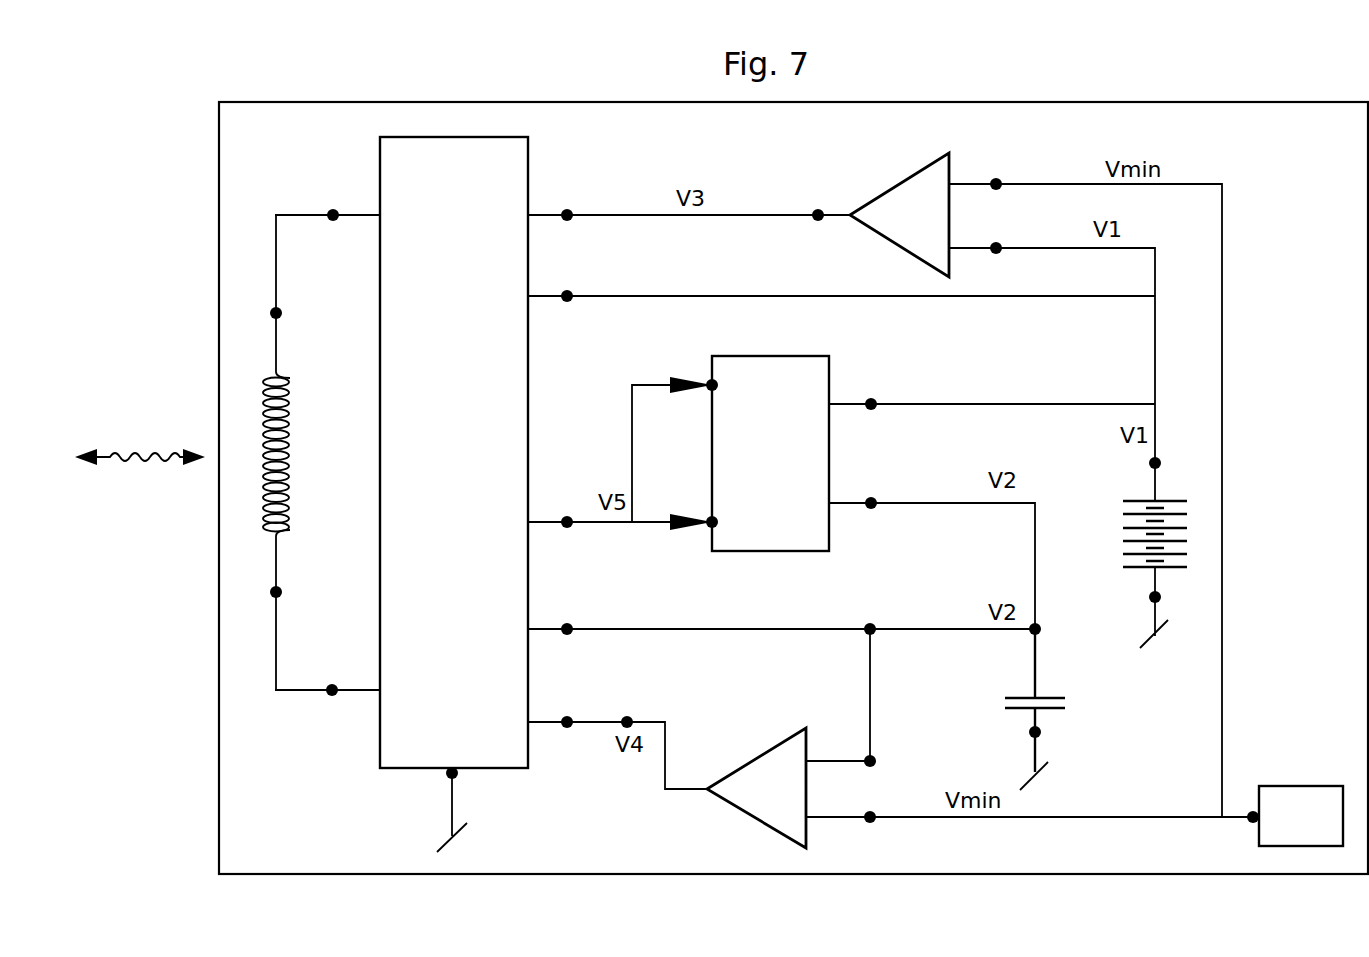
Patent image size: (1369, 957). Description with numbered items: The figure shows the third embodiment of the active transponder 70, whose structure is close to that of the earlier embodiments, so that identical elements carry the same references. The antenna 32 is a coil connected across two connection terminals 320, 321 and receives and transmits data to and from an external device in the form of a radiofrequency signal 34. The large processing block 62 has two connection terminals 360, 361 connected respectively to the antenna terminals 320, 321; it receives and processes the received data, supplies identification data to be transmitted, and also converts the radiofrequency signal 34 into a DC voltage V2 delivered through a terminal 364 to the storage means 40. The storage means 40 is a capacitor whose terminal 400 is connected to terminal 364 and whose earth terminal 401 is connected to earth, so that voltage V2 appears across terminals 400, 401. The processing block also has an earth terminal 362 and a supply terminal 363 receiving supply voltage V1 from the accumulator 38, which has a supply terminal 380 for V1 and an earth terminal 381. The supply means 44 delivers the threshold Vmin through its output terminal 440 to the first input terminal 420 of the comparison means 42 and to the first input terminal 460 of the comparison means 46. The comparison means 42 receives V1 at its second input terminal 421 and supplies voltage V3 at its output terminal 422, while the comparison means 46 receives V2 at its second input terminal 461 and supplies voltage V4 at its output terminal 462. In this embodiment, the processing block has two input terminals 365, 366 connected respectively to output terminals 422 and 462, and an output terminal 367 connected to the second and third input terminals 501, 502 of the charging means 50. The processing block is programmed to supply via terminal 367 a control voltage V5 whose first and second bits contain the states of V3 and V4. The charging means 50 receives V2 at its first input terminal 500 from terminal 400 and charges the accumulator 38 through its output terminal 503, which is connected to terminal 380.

The active transponder 70 is at (206, 236).
The control circuit 62 is at (508, 412).
The antenna 32 is at (295, 452).
The radiofrequency signal 34 is at (140, 444).
The connection terminal 360 is at (327, 202).
The connection terminal 361 is at (327, 677).
The connection terminal 320 is at (299, 314).
The connection terminal 321 is at (299, 593).
The earth terminal 362 is at (470, 809).
The supply terminal 363 is at (841, 283).
The terminal 364 is at (781, 616).
The input terminal 365 is at (689, 202).
The input terminal 366 is at (617, 739).
The output terminal 367 is at (609, 456).
The comparison means 42 is at (900, 200).
The first input terminal 420 is at (1085, 484).
The second input terminal 421 is at (1052, 359).
The output terminal 422 is at (818, 202).
The charging means 50 is at (727, 437).
The first input terminal 500 is at (932, 550).
The second input terminal 501 is at (693, 372).
The third input terminal 502 is at (693, 510).
The output terminal 503 is at (992, 391).
The accumulator 38 is at (1102, 513).
The supply terminal 380 is at (1179, 463).
The earth terminal 381 is at (1174, 607).
The storage means 40 is at (1088, 696).
The terminal 400 is at (1059, 629).
The earth terminal 401 is at (1054, 755).
The comparison means 46 is at (766, 776).
The first input terminal 460 is at (1029, 803).
The second input terminal 461 is at (865, 701).
The output terminal 462 is at (627, 709).
The supply means 44 is at (1298, 785).
The output terminal 440 is at (1231, 828).